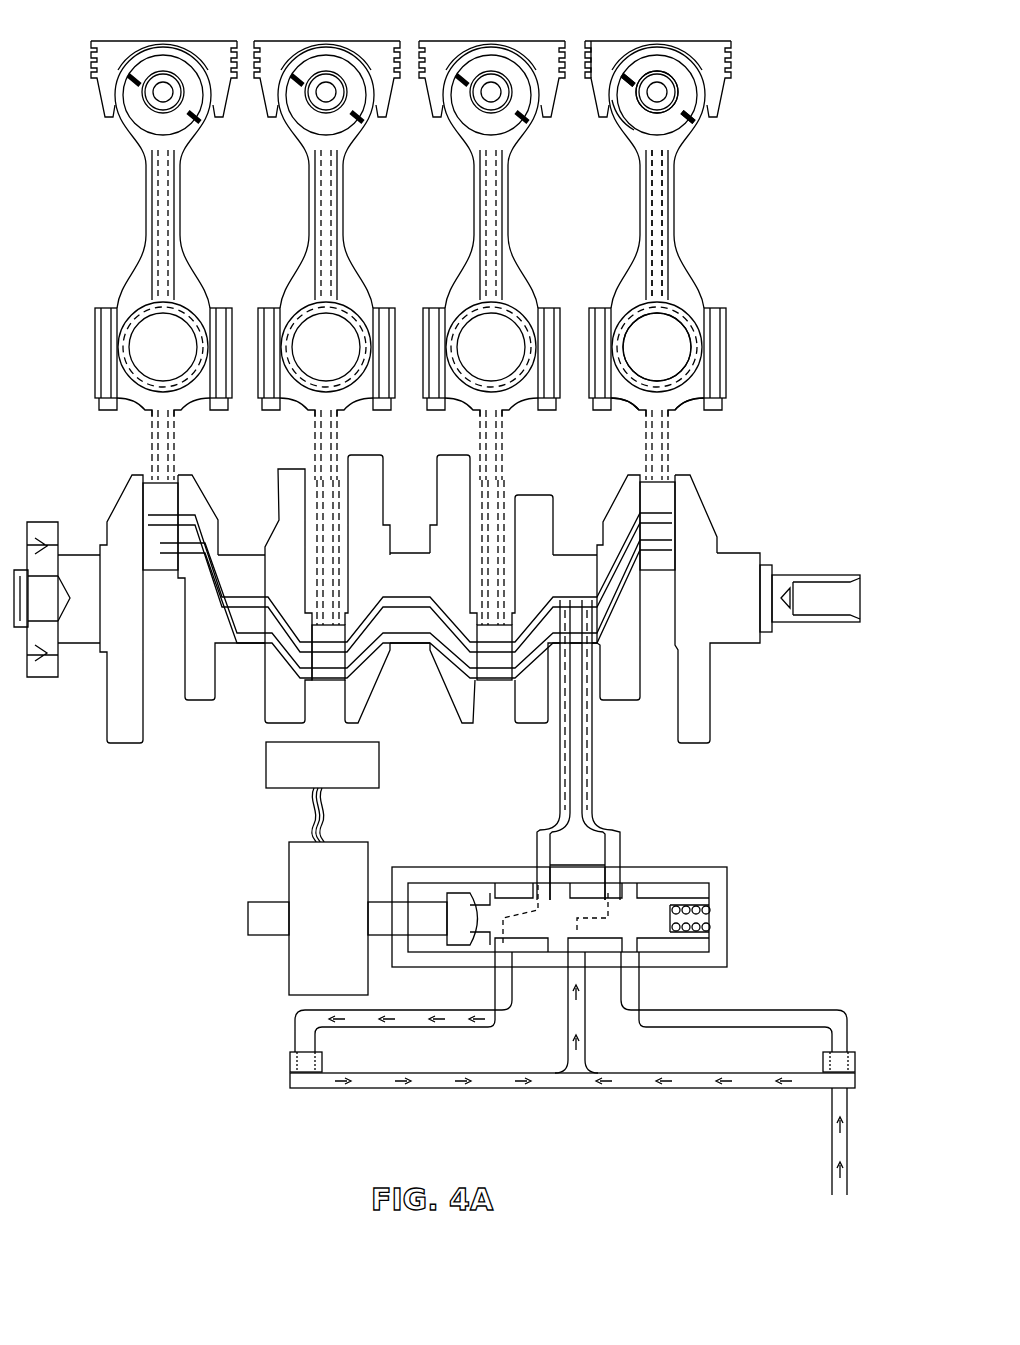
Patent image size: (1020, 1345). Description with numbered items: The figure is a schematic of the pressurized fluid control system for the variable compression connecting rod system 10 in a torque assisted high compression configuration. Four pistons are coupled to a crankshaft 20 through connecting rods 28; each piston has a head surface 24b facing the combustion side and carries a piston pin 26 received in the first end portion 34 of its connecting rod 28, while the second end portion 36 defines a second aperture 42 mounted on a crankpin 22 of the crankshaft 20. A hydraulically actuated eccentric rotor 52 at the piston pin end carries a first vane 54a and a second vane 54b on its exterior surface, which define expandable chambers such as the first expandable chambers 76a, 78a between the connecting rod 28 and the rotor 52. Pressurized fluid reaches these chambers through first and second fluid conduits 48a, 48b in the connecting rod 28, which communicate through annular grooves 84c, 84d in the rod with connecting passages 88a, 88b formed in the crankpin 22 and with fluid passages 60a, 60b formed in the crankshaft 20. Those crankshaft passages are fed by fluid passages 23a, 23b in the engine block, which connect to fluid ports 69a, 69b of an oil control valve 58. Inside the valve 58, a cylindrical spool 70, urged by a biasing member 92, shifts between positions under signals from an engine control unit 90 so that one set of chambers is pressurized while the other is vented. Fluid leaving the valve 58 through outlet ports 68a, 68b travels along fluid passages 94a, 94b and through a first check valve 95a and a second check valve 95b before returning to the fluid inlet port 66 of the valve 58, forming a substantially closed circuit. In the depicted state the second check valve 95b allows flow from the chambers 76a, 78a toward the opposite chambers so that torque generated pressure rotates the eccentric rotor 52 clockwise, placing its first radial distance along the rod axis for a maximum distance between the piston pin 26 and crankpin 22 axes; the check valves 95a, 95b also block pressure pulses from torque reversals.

The variable compression connecting rod system 10 is at (468, 314).
The crankshaft 20 is at (437, 619).
The crankpin 22 is at (672, 505).
The fluid passage 23a is at (594, 785).
The fluid passage 23b is at (558, 782).
The head surface 24b is at (612, 48).
The piston pin 26 is at (680, 92).
The connecting rod 28 is at (672, 253).
The first end portion 34 is at (680, 138).
The second end portion 36 is at (712, 312).
The second aperture 42 is at (657, 347).
The first fluid conduit 48a is at (645, 212).
The second fluid conduit 48b is at (668, 215).
The hydraulically actuated eccentric rotor 52 is at (700, 95).
The first vane 54a is at (602, 92).
The second vane 54b is at (700, 128).
The oil control valve 58 is at (313, 965).
The fluid passage 60a is at (493, 682).
The fluid passage 60b is at (452, 637).
The fluid inlet port 66 is at (572, 1047).
The outlet port 68a is at (637, 960).
The outlet port 68b is at (493, 957).
The fluid port 69a is at (635, 867).
The fluid port 69b is at (520, 867).
The cylindrical spool 70 is at (594, 929).
The first expandable chamber 76a is at (617, 122).
The first expandable chamber 78a is at (702, 105).
The annular groove 84c is at (630, 390).
The annular groove 84d is at (685, 385).
The connecting passage 88a is at (660, 520).
The connecting passage 88b is at (672, 548).
The engine control unit 90 is at (288, 765).
The biasing member 92 is at (693, 917).
The fluid passage 94a is at (688, 1018).
The fluid passage 94b is at (455, 1028).
The first check valve 95a is at (848, 1063).
The second check valve 95b is at (310, 1073).